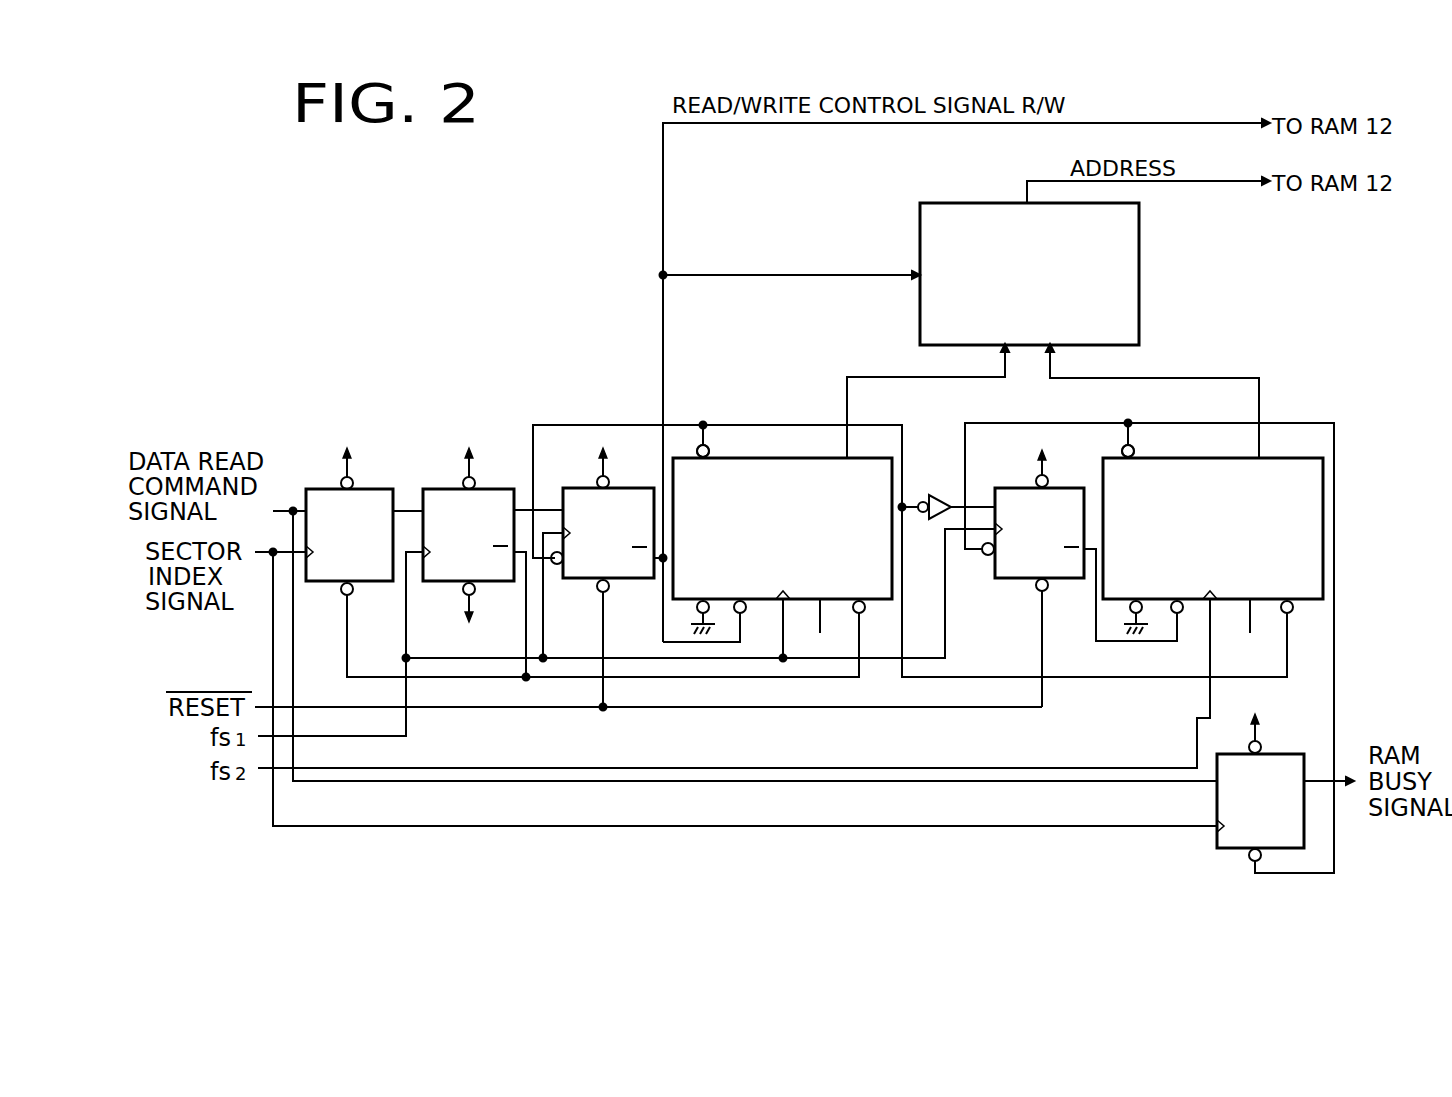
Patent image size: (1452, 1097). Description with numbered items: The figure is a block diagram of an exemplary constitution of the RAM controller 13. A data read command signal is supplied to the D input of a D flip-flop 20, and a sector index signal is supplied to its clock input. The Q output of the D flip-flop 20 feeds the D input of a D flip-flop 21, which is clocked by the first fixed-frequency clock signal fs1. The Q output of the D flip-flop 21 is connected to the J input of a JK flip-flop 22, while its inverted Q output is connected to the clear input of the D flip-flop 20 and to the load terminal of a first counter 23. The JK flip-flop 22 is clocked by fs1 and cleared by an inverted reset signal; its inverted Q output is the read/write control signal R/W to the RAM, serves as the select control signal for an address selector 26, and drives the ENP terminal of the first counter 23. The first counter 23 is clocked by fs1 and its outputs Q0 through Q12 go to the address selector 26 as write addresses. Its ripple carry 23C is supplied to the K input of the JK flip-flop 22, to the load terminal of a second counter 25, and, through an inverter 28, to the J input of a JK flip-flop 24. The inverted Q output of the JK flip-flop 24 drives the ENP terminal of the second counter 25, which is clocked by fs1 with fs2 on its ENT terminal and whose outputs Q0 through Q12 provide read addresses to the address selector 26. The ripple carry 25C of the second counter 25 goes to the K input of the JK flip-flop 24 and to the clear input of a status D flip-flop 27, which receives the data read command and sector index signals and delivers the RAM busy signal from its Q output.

The RAM controller 13 is at (841, 406).
The D flip-flop 20 is at (369, 489).
The D flip-flop 21 is at (488, 489).
The JK flip-flop 22 is at (581, 487).
The first counter 23 is at (773, 458).
The ripple carry 23C is at (703, 423).
The JK flip-flop 24 is at (1001, 486).
The second counter 25 is at (1166, 458).
The ripple carry 25C is at (1127, 423).
The address selector 26 is at (1139, 292).
The status D flip-flop 27 is at (1215, 843).
The inverter 28 is at (940, 496).